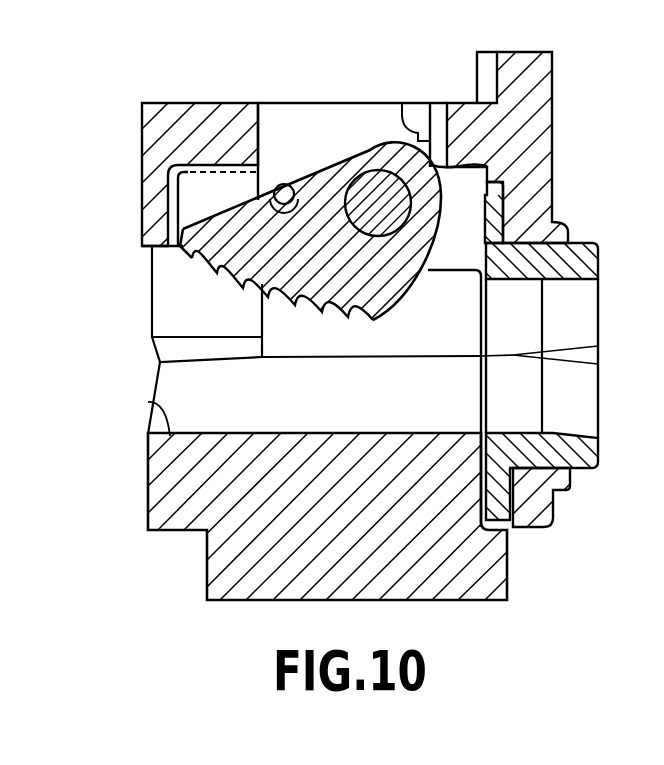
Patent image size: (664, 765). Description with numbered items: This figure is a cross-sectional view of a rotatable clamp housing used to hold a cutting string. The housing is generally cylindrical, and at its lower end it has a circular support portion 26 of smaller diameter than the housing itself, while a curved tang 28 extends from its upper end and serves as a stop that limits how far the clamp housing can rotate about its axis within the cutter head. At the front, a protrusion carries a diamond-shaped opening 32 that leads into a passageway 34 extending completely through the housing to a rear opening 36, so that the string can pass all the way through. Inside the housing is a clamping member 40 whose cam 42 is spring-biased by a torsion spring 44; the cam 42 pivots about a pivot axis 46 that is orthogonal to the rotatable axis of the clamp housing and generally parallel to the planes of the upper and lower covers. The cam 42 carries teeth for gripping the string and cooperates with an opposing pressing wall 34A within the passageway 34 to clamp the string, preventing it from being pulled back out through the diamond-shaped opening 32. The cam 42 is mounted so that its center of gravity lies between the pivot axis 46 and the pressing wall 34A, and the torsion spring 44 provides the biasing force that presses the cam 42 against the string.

The circular support portion 26 is at (205, 568).
The curved tang 28 is at (545, 81).
The diamond-shaped opening 32 is at (577, 278).
The passageway 34 is at (265, 403).
The pressing wall 34A is at (420, 433).
The rear opening 36 is at (148, 402).
The clamping member 40 is at (328, 158).
The cam 42 is at (215, 268).
The torsion spring 44 is at (283, 184).
The pivot axis 46 is at (379, 170).